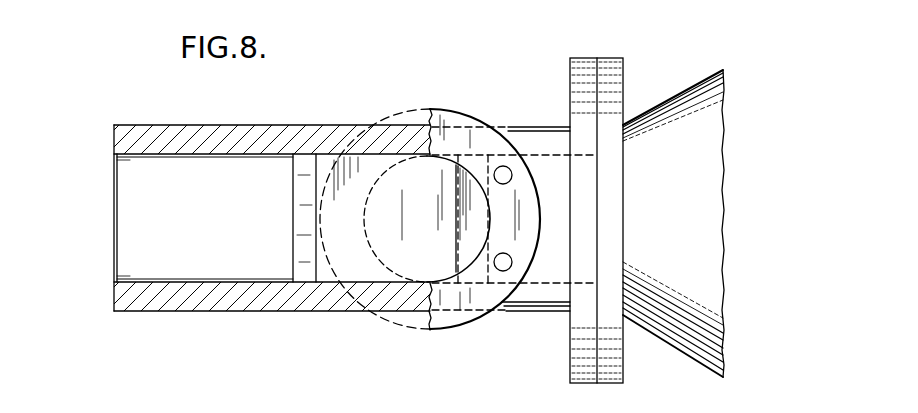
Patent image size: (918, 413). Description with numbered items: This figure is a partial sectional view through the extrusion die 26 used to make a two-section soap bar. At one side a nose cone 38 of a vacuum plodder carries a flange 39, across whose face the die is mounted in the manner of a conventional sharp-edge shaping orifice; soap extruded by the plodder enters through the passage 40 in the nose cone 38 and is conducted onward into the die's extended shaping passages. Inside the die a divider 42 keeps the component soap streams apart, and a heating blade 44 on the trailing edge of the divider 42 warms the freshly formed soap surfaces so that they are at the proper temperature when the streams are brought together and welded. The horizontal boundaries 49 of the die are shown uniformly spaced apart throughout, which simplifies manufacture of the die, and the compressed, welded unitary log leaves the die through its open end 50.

The extrusion die 26 is at (108, 303).
The nose cone 38 is at (683, 100).
The flange 39 is at (613, 64).
The passage 40 is at (424, 172).
The divider 42 is at (357, 285).
The heating blade 44 is at (292, 235).
The horizontal boundaries 49 is at (155, 152).
The open end 50 is at (114, 218).